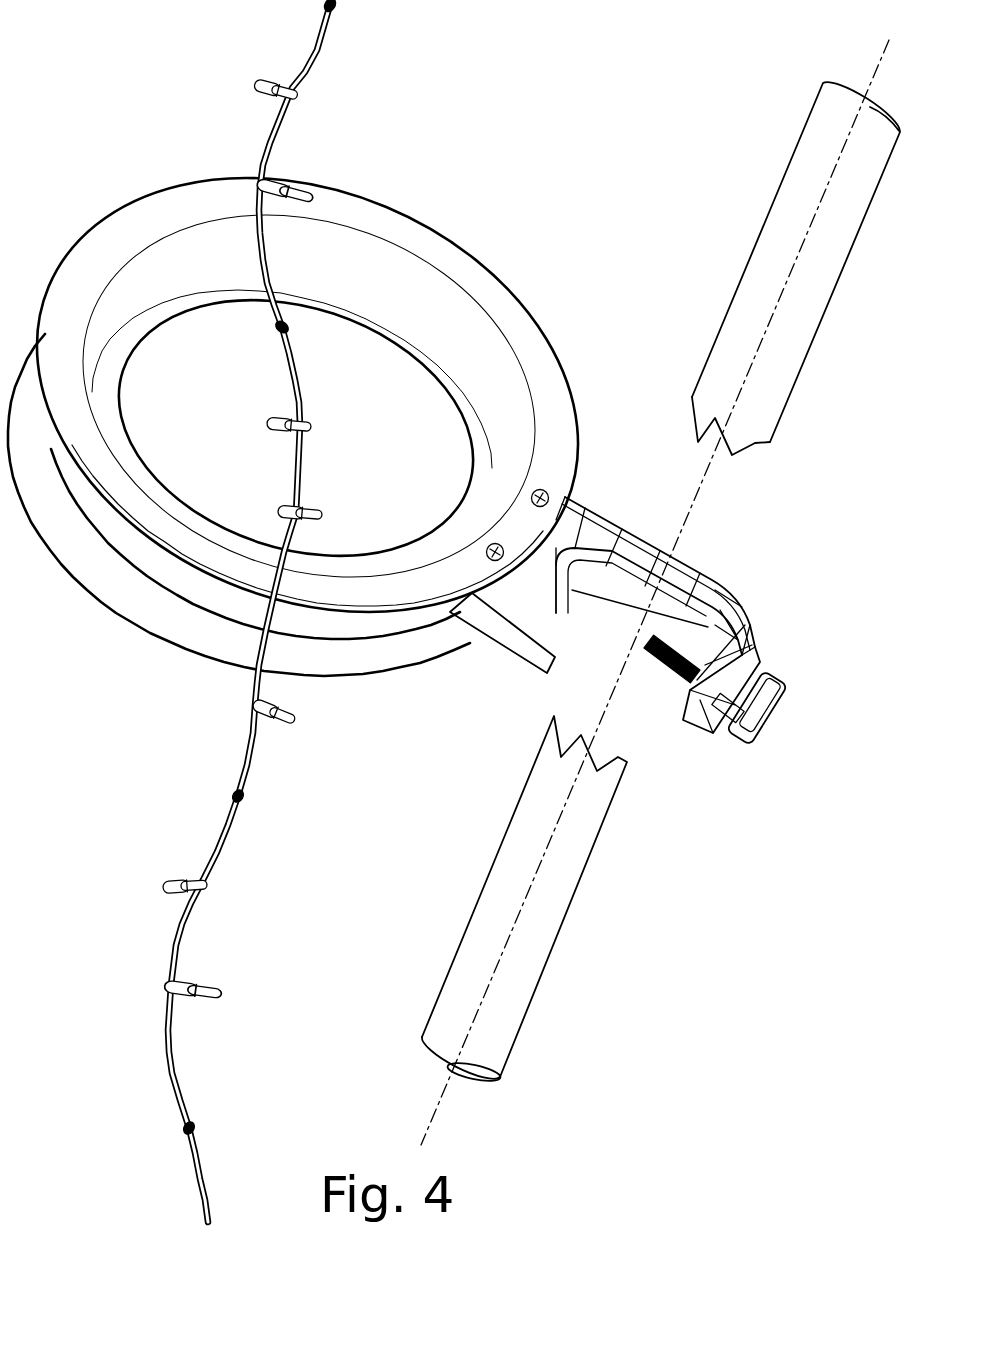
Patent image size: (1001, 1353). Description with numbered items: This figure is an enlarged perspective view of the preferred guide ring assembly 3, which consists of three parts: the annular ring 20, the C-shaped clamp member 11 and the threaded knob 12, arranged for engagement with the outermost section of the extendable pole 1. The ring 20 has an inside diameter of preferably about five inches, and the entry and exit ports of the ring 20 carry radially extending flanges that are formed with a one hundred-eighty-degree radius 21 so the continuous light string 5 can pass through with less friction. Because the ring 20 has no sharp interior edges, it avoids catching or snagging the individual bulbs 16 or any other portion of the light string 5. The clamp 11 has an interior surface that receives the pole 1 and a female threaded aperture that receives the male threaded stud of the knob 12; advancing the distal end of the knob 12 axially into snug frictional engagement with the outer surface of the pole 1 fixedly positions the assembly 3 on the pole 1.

The extendable pole 1 is at (476, 932).
The guide ring assembly 3 is at (580, 455).
The continuous light string 5 is at (222, 835).
The C-shaped clamp member 11 is at (717, 578).
The threaded knob 12 is at (783, 710).
The individual bulbs 16 is at (285, 424).
The annular ring 20 is at (457, 242).
The one hundred-eighty-degree radius 21 is at (230, 283).